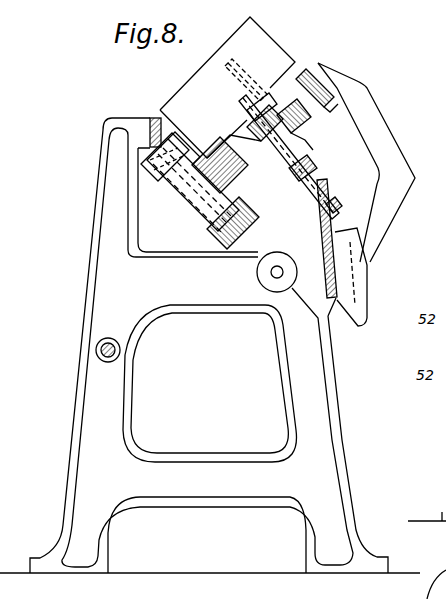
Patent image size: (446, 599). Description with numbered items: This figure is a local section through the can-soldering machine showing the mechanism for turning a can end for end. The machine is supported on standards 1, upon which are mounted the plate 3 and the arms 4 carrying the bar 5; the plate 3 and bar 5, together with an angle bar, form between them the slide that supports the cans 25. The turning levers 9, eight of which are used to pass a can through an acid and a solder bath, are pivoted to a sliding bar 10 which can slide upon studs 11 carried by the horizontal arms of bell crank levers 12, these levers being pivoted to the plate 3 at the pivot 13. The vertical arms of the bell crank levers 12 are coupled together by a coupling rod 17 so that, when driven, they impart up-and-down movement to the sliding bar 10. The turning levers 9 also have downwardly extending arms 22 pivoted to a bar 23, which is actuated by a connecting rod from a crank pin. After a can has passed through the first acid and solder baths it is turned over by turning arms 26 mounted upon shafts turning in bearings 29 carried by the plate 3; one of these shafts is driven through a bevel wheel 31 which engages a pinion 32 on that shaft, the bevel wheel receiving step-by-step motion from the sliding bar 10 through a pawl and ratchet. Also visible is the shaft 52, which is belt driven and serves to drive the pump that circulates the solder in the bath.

The standards 1 is at (96, 288).
The plate 3 is at (340, 232).
The arms 4 is at (400, 165).
The bar 5 is at (300, 72).
The turning levers 9 is at (278, 93).
The sliding bar 10 is at (289, 156).
The studs 11 is at (245, 118).
The bell crank levers 12 is at (178, 195).
The pivot 13 is at (312, 157).
The coupling rod 17 is at (343, 207).
The downwardly extending arms 22 is at (305, 135).
The bar 23 is at (310, 123).
The cans 25 is at (213, 75).
The turning arms 26 is at (160, 165).
The bearings 29 is at (178, 193).
The bevel wheel 31 is at (262, 252).
The pinion 32 is at (225, 246).
The shaft 52 is at (96, 350).